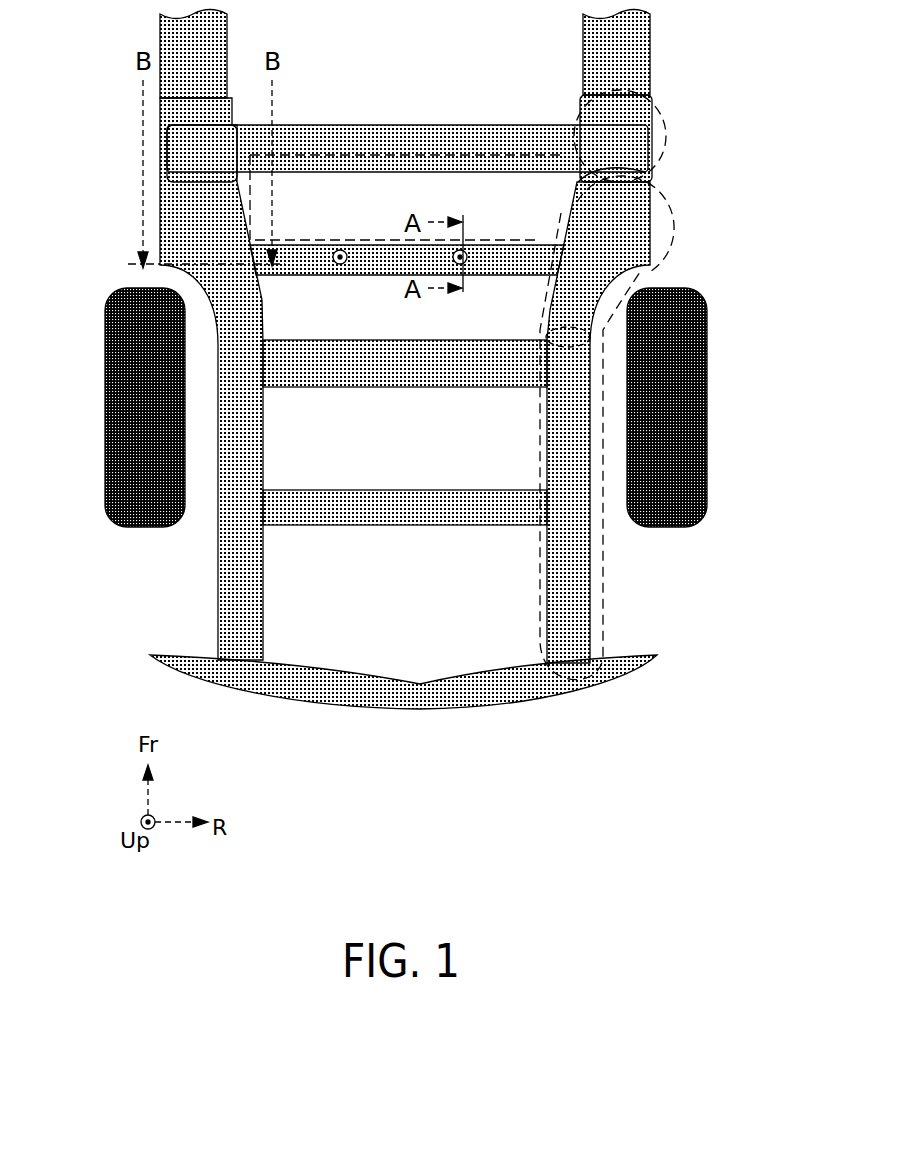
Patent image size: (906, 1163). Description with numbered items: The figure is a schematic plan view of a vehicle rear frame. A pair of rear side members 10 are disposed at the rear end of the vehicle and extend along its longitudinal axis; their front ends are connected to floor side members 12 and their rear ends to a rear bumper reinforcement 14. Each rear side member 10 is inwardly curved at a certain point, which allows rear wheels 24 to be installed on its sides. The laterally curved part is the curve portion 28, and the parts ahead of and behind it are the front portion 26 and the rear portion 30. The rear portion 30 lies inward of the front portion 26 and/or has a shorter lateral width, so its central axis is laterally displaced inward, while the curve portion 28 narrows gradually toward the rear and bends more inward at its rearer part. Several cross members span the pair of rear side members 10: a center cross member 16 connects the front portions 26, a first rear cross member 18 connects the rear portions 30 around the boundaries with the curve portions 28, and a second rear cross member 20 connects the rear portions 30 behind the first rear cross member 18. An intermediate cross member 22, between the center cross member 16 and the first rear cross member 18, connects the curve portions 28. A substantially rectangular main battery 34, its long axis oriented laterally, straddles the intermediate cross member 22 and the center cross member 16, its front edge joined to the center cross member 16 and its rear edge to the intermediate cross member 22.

The rear side member 10 is at (225, 605).
The floor side member 12 is at (628, 58).
The rear bumper reinforcement 14 is at (430, 708).
The center cross member 16 is at (475, 125).
The first rear cross member 18 is at (400, 387).
The second rear cross member 20 is at (402, 525).
The intermediate cross member 22 is at (492, 276).
The rear wheel 24 is at (104, 440).
The front portion 26 is at (680, 136).
The curve portion 28 is at (678, 226).
The rear portion 30 is at (605, 563).
The main battery 34 is at (355, 155).